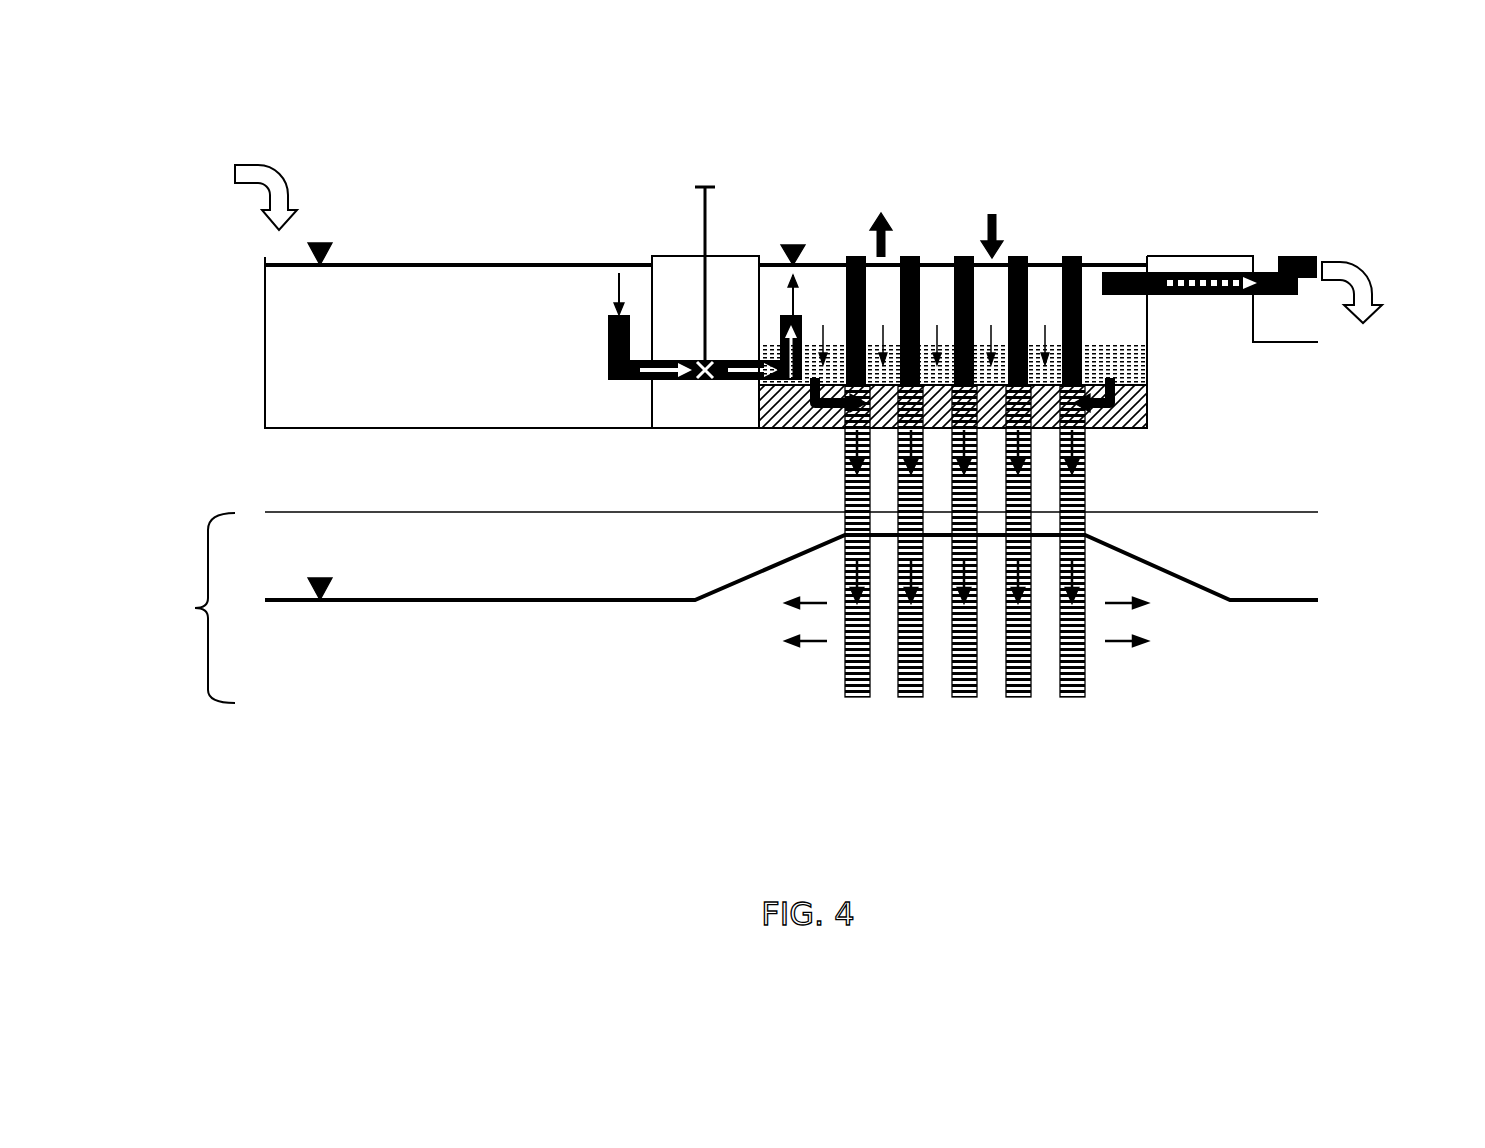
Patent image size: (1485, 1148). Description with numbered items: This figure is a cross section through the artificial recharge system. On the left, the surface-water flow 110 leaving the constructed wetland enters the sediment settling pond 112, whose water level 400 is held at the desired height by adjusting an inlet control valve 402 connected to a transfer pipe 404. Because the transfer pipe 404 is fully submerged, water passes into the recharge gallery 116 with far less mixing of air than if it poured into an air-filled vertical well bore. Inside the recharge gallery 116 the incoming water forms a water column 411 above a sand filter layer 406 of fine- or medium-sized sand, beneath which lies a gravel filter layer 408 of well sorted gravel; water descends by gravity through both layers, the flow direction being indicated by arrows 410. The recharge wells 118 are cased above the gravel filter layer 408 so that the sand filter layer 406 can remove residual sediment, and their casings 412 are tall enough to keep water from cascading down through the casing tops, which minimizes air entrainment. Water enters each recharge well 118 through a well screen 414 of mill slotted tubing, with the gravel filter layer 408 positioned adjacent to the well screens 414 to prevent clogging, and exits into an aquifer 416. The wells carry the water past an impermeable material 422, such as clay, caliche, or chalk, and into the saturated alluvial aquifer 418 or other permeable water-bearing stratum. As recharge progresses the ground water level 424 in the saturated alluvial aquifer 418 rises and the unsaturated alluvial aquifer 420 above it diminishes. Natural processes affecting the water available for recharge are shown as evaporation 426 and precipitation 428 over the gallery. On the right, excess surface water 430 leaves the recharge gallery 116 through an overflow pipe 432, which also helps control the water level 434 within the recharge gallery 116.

The surface-water flow 110 is at (232, 173).
The sediment settling pond 112 is at (285, 333).
The recharge gallery 116 is at (831, 272).
The recharge wells 118 is at (845, 452).
The water level 400 is at (364, 265).
The inlet control valve 402 is at (703, 182).
The transfer pipe 404 is at (606, 355).
The sand filter layer 406 is at (1147, 365).
The gravel filter layer 408 is at (1147, 405).
The arrows 410 is at (802, 652).
The water column 411 is at (820, 327).
The casings 412 is at (855, 256).
The well screen 414 is at (867, 708).
The aquifer 416 is at (195, 608).
The saturated alluvial aquifer 418 is at (351, 663).
The unsaturated alluvial aquifer 420 is at (351, 540).
The impermeable material 422 is at (791, 487).
The water level 424 is at (478, 600).
The evaporation 426 is at (883, 210).
The precipitation 428 is at (992, 210).
The excess surface water 430 is at (1362, 270).
The overflow pipe 432 is at (1298, 250).
The water level 434 is at (778, 262).